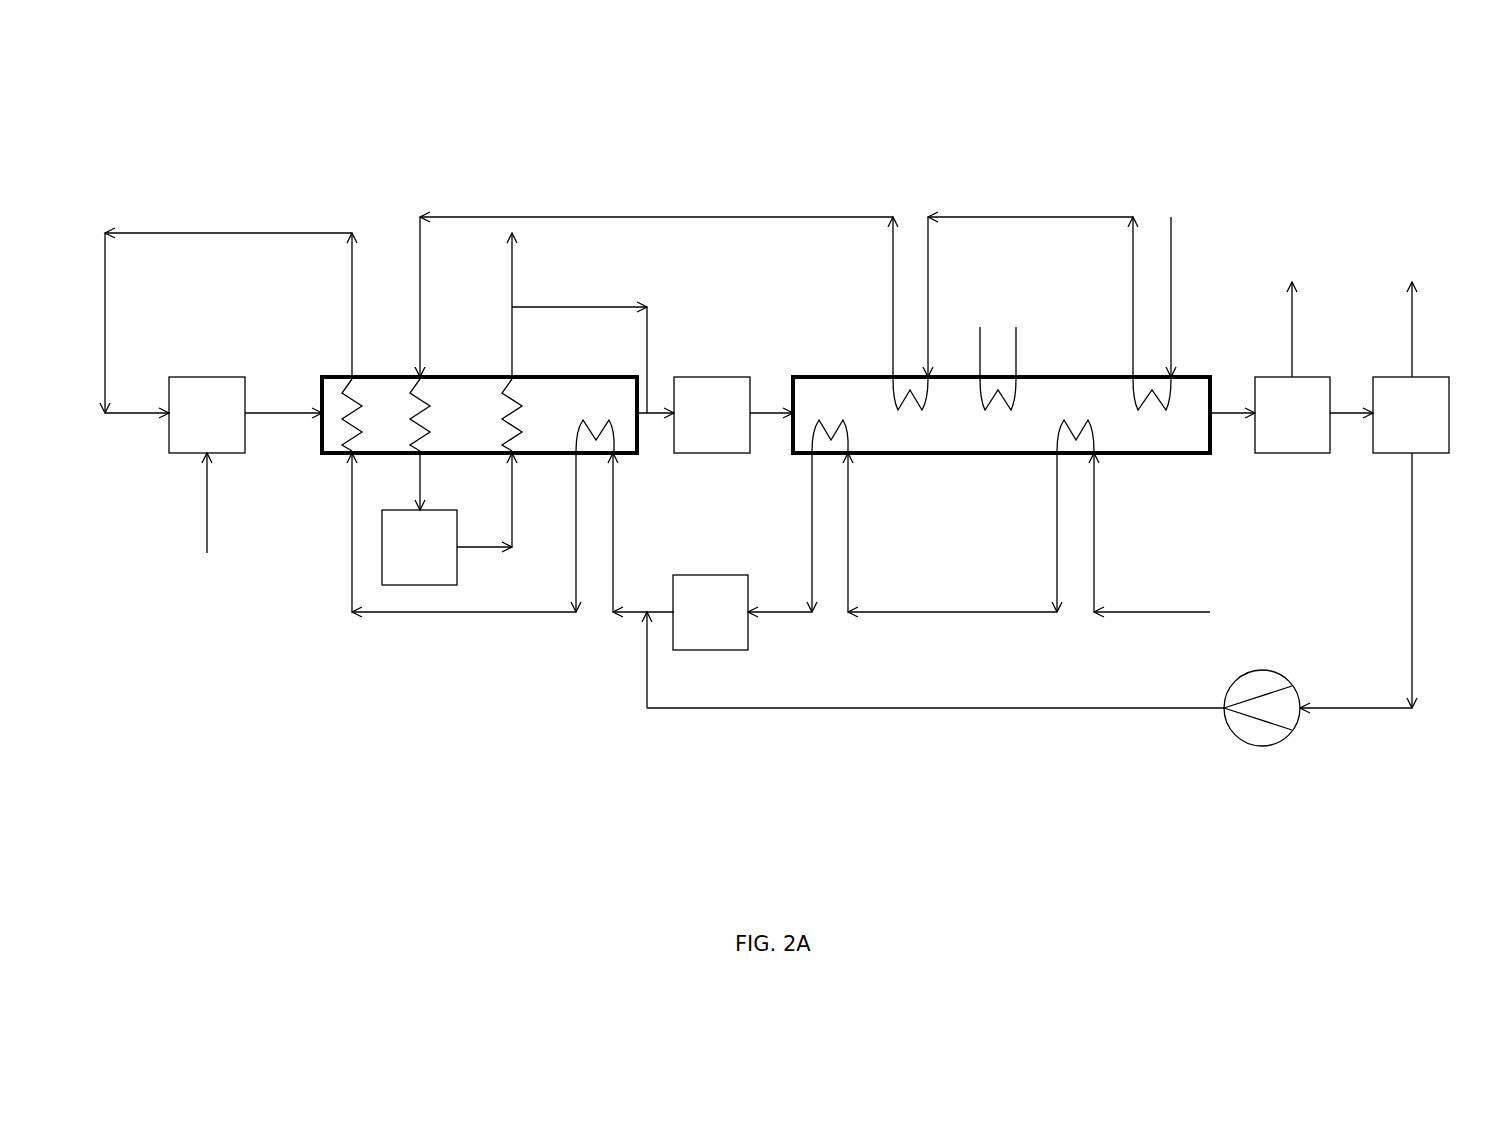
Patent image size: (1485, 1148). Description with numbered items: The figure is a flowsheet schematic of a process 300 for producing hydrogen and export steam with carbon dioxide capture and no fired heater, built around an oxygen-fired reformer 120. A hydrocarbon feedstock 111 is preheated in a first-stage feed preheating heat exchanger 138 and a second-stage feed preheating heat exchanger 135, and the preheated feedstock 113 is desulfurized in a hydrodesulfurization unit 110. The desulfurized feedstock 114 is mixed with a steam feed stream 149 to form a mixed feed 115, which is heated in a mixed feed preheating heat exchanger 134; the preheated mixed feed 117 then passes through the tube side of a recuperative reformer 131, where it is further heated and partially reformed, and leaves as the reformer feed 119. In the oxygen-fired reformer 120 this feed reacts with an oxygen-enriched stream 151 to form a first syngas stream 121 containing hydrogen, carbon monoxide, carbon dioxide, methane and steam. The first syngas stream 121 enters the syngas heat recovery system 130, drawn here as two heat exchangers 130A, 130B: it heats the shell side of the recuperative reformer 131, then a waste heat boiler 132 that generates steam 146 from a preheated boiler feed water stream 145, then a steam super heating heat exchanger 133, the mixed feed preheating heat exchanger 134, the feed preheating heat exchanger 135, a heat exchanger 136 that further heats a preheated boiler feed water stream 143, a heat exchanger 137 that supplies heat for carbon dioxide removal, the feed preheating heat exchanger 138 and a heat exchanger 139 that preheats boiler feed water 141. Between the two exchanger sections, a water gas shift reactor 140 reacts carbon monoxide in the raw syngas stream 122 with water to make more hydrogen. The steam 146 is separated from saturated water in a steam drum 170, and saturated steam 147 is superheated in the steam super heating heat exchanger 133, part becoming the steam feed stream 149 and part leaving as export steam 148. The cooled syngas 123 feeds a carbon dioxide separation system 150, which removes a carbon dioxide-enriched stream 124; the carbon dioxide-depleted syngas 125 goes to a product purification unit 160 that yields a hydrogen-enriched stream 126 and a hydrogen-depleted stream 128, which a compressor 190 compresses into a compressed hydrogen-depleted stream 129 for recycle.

The process 300 is at (245, 95).
The hydrodesulfurization unit 110 is at (731, 624).
The hydrocarbon feedstock 111 is at (1140, 618).
The preheated feedstock 113 is at (790, 618).
The desulfurized feedstock 114 is at (658, 607).
The mixed feed 115 is at (607, 615).
The preheated mixed feed 117 is at (443, 618).
The reformer feed 119 is at (195, 240).
The oxygen-fired reformer 120 is at (228, 426).
The first syngas stream 121 is at (263, 412).
The raw syngas stream 122 is at (660, 430).
The cooled syngas 123 is at (1228, 420).
The carbon dioxide-enriched stream 124 is at (1294, 345).
The carbon dioxide-depleted syngas 125 is at (1353, 420).
The hydrogen-enriched stream 126 is at (1414, 328).
The hydrogen-depleted stream 128 is at (1345, 712).
The compressed hydrogen-depleted stream 129 is at (835, 712).
The syngas heat recovery system 130 is at (793, 377).
The heat exchanger 130A is at (516, 395).
The heat exchanger 130B is at (967, 395).
The recuperative reformer 131 is at (409, 426).
The waste heat boiler 132 is at (479, 426).
The steam super heating heat exchanger 133 is at (573, 426).
The mixed feed preheating heat exchanger 134 is at (619, 416).
The feed preheating heat exchanger 135 is at (859, 416).
The heat exchanger 136 is at (936, 442).
The heat exchanger 137 is at (1026, 442).
The feed preheating heat exchanger 138 is at (1097, 416).
The heat exchanger 139 is at (1181, 442).
The water gas shift reactor 140 is at (733, 426).
The boiler feed water 141 is at (1175, 272).
The preheated boiler feed water stream 143 is at (932, 278).
The preheated boiler feed water stream 145 is at (422, 275).
The steam 146 is at (423, 470).
The saturated steam 147 is at (515, 495).
The export steam 148 is at (512, 288).
The steam feed stream 149 is at (562, 307).
The carbon dioxide separation system 150 is at (1313, 426).
The oxygen-enriched stream 151 is at (207, 490).
The product purification unit 160 is at (1432, 426).
The steam drum 170 is at (440, 559).
The compressor 190 is at (1287, 721).